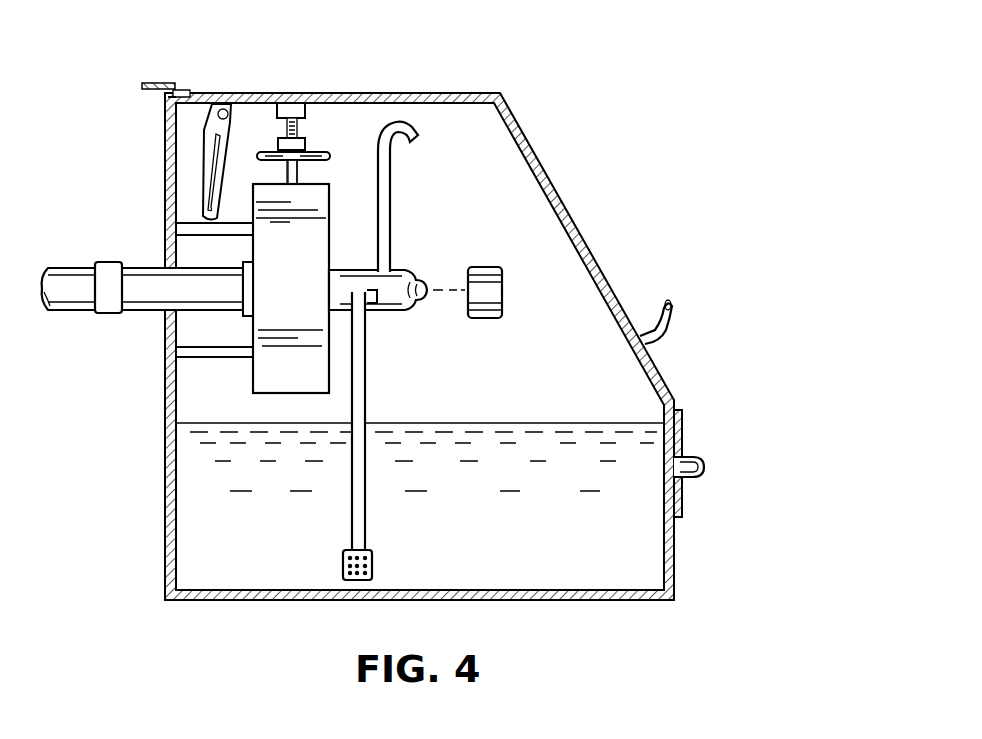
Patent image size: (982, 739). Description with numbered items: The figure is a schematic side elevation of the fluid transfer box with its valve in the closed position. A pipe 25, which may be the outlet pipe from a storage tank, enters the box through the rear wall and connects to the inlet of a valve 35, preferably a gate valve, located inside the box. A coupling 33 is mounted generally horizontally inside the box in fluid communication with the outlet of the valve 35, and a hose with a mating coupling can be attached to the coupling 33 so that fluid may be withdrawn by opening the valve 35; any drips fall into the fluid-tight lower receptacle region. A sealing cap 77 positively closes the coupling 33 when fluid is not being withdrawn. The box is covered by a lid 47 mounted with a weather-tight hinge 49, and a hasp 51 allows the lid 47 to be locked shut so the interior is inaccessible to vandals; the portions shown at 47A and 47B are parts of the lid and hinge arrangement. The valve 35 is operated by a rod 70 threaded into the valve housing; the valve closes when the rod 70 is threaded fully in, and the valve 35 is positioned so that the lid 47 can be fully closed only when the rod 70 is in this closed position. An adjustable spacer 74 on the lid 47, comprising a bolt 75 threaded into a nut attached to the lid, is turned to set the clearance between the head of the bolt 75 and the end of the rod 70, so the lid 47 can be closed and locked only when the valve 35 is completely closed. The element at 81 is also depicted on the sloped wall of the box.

The pipe 25 is at (78, 268).
The coupling 33 is at (410, 311).
The valve 35 is at (268, 375).
The lid 47 is at (660, 373).
The lid tab 47A is at (163, 86).
The lid bracket arm 47B is at (230, 158).
The hinge 49 is at (172, 96).
The hasp 51 is at (702, 462).
The rod 70 is at (310, 170).
The adjustable spacer 74 is at (308, 108).
The bolt 75 is at (322, 150).
The sealing cap 77 is at (487, 318).
The hook 81 is at (672, 302).